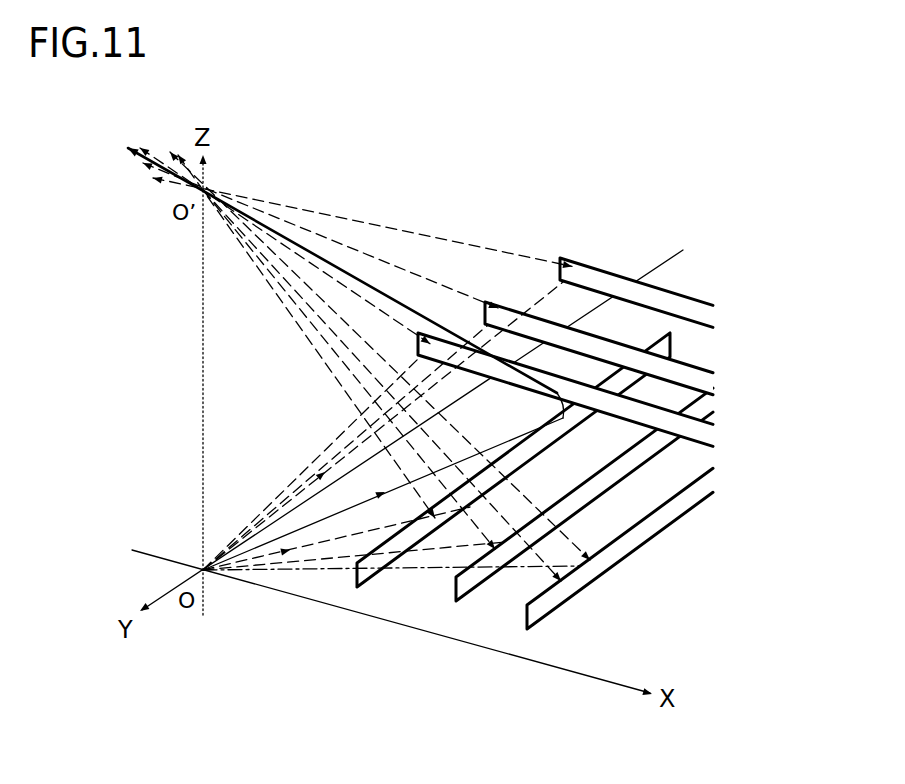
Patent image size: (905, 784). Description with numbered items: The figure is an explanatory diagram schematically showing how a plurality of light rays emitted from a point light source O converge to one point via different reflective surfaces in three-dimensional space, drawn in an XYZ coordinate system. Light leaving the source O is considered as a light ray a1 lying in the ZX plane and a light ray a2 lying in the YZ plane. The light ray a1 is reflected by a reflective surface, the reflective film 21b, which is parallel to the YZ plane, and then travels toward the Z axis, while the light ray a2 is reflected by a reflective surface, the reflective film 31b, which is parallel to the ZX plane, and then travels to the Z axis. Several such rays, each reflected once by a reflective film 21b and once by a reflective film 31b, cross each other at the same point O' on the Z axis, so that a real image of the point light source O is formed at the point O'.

The reflective film 31b is at (607, 283).
The reflective film 21b is at (628, 557).
The light ray a1 is at (336, 553).
The light ray a2 is at (383, 494).